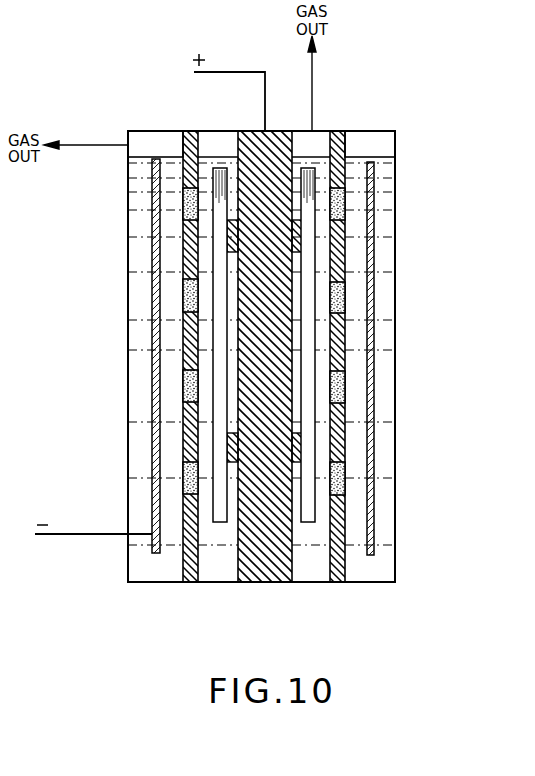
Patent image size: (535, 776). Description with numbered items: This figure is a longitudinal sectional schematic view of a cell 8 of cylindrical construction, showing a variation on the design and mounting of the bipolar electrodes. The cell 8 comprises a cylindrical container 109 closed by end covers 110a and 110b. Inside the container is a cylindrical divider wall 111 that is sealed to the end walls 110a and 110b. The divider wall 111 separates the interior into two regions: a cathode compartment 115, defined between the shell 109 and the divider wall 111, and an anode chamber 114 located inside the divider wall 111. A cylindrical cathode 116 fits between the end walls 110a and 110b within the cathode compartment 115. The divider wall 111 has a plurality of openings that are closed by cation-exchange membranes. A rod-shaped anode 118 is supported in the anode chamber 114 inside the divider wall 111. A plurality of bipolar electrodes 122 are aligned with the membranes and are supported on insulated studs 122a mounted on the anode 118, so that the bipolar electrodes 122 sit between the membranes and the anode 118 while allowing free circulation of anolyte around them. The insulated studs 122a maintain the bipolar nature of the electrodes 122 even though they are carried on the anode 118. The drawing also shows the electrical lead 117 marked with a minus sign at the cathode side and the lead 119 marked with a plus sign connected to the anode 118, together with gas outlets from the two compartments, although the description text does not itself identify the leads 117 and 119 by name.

The cell 8 is at (353, 88).
The cylindrical container 109 is at (128, 432).
The end cover 110a is at (365, 131).
The end cover 110b is at (362, 583).
The divider wall 111 is at (185, 131).
The anode chamber 114 is at (306, 565).
The cathode compartment 115 is at (140, 200).
The cathode 116 is at (158, 303).
The negative lead 117 is at (66, 537).
The anode 118 is at (253, 560).
The positive lead 119 is at (241, 72).
The bipolar electrodes 122 is at (213, 168).
The insulated studs 122a is at (228, 240).